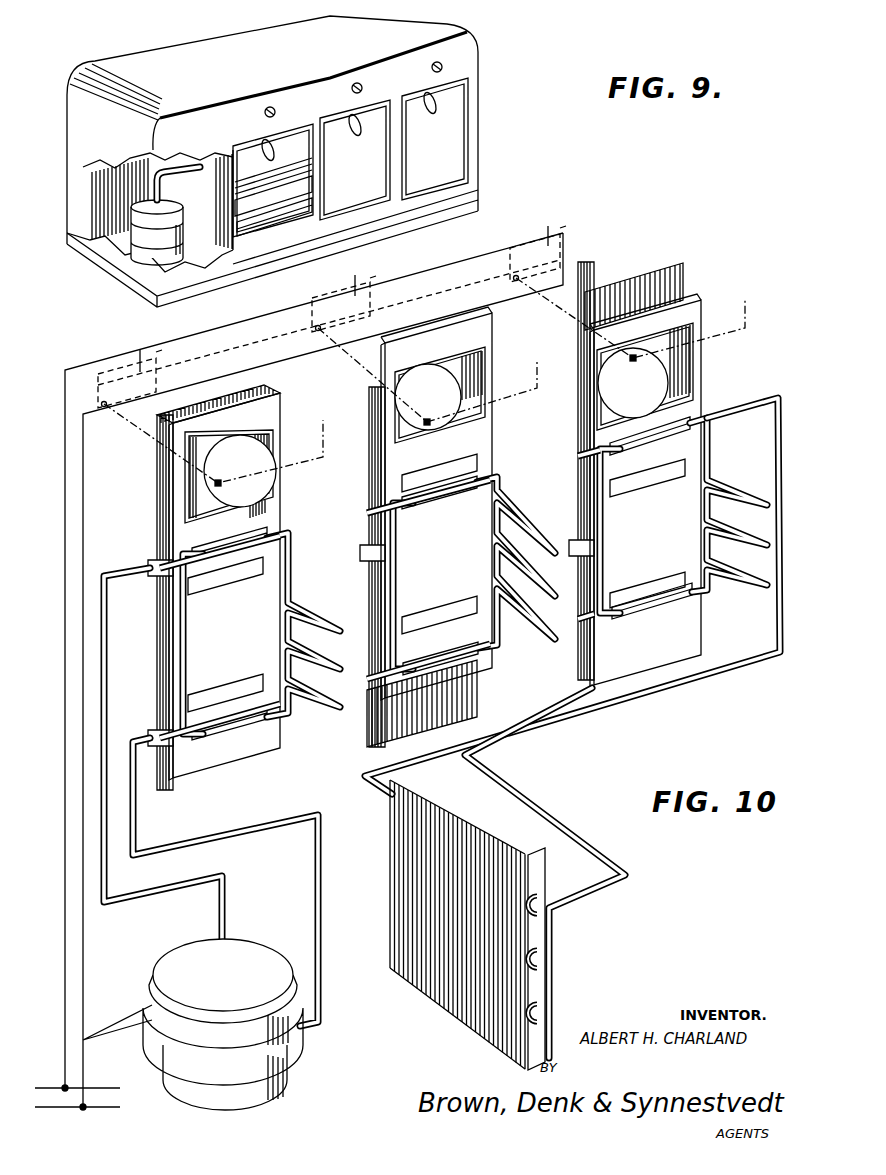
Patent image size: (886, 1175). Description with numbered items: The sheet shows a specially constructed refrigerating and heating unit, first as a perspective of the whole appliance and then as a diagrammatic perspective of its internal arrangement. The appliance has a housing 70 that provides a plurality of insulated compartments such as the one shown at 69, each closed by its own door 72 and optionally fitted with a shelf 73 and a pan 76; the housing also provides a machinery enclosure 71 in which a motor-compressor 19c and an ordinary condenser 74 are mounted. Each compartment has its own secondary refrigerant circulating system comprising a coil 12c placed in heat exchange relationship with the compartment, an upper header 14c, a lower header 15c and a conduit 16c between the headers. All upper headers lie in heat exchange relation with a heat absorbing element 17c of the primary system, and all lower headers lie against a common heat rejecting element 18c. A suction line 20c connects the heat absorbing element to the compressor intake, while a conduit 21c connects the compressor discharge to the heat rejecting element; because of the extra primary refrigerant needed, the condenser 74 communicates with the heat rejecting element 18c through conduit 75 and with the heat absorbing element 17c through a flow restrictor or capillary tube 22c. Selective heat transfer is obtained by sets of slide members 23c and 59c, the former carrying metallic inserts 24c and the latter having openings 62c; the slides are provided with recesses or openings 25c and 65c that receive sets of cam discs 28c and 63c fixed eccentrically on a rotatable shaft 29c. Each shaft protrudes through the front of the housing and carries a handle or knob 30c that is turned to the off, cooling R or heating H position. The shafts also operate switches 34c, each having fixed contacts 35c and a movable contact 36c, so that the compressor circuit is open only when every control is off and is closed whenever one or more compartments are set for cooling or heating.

In FIG. 9, the housing 70 is at (430, 27).
In FIG. 9, the door 72 is at (240, 150).
In FIG. 9, the handles or knobs 30c is at (267, 105).
In FIG. 9, the condenser 74 is at (112, 196).
In FIG. 10, the condenser 74 is at (420, 990).
In FIG. 9, the motor-compressor 19c is at (130, 258).
In FIG. 10, the motor-compressor 19c is at (247, 940).
In FIG. 9, the machinery enclosure 71 is at (212, 188).
In FIG. 9, the shelf 73 is at (282, 212).
In FIG. 9, the pan 76 is at (258, 232).
In FIG. 9, the insulated compartment 69 is at (305, 175).
In FIG. 10, the switch 34c is at (160, 360).
In FIG. 10, the movable contact 36c is at (329, 321).
In FIG. 10, the fixed contacts 35c is at (114, 380).
In FIG. 10, the openings 62c is at (155, 582).
In FIG. 10, the slide member 23c is at (280, 412).
In FIG. 10, the slide member 59c is at (257, 398).
In FIG. 10, the cam discs 63c is at (190, 470).
In FIG. 10, the recesses or openings 25c is at (172, 528).
In FIG. 10, the recesses or openings 65c is at (200, 507).
In FIG. 10, the cam discs 28c is at (276, 478).
In FIG. 10, the rotatable shaft 29c is at (232, 490).
In FIG. 10, the upper header 14c is at (240, 552).
In FIG. 10, the lower header 15c is at (245, 735).
In FIG. 10, the metallic inserts 24c is at (235, 580).
In FIG. 10, the conduit 16c is at (186, 640).
In FIG. 10, the coil 12c is at (312, 722).
In FIG. 10, the heat absorbing element 17c is at (325, 533).
In FIG. 10, the heat rejecting element 18c is at (367, 660).
In FIG. 10, the suction line 20c is at (165, 895).
In FIG. 10, the conduit 21c is at (240, 840).
In FIG. 10, the flow restrictor or capillary tube 22c is at (540, 735).
In FIG. 10, the conduit 75 is at (535, 730).